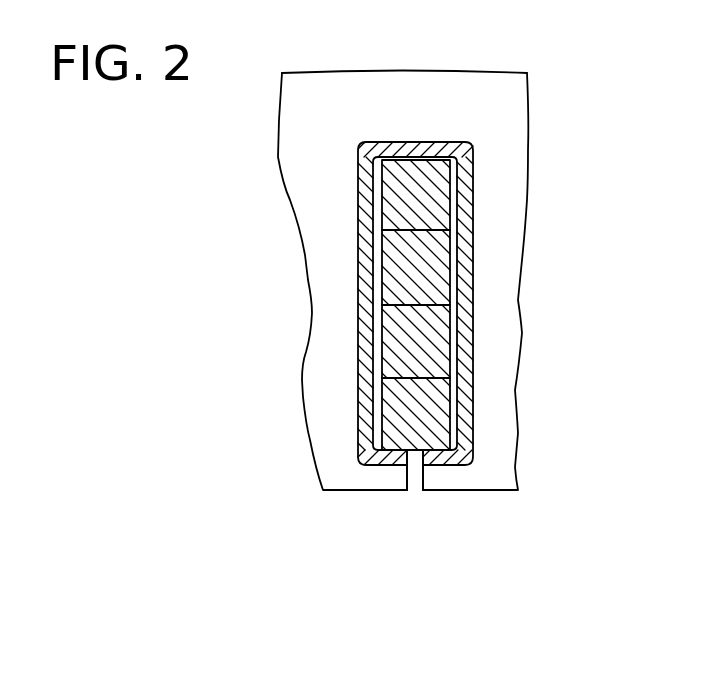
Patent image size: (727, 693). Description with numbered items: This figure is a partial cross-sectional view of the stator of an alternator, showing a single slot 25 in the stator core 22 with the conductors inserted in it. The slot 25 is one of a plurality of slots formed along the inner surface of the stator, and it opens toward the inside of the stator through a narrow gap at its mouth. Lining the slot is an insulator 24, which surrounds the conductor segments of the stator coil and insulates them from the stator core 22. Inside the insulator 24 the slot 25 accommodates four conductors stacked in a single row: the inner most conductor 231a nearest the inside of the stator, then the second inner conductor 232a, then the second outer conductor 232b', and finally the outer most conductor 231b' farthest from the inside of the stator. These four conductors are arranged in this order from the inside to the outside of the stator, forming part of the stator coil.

The stator core 22 is at (472, 80).
The insulator 24 is at (467, 143).
The outer most conductor 231b' is at (498, 195).
The second outer conductor 232b' is at (498, 267).
The second inner conductor 232a is at (428, 340).
The inner most conductor 231a is at (428, 413).
The slot 25 is at (418, 483).